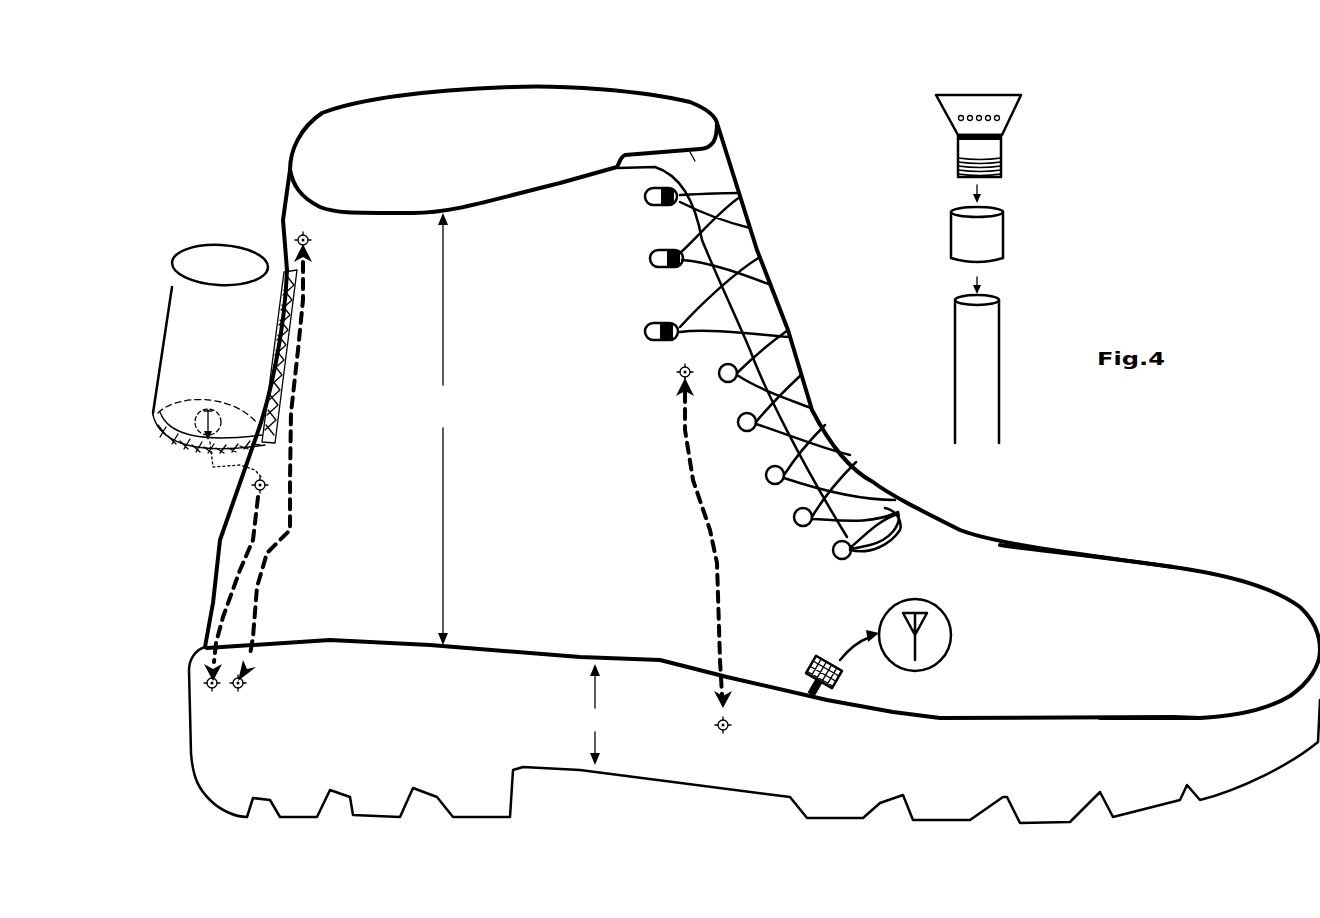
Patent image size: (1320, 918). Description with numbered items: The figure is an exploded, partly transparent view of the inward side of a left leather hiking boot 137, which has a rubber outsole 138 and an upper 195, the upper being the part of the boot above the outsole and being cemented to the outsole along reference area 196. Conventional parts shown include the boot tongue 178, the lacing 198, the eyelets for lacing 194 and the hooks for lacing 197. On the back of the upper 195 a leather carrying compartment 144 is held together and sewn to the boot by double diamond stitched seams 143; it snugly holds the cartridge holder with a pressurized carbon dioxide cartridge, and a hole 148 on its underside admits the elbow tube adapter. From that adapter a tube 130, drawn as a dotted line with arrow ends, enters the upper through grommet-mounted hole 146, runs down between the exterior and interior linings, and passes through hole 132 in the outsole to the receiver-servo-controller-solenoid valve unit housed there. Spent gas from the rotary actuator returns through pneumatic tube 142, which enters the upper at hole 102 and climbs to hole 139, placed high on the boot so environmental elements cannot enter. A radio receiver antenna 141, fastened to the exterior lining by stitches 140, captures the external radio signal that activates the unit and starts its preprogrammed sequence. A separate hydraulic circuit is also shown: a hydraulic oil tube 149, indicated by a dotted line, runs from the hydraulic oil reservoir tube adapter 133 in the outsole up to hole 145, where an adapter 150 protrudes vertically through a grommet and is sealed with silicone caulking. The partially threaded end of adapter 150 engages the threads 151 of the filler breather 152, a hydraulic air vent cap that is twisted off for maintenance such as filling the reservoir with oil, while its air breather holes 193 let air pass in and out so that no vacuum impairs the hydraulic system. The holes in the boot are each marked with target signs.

The hole 102 is at (730, 730).
The tube 130 is at (231, 589).
The hole 132 is at (218, 688).
The hydraulic oil reservoir tube adapter 133 is at (248, 678).
The leather hiking boot 137 is at (1073, 565).
The rubber outsole 138 is at (595, 714).
The hole 139 is at (680, 376).
The stitches 140 is at (803, 660).
The radio receiver antenna 141 is at (823, 653).
The pneumatic tube 142 is at (704, 543).
The stitches 143 is at (178, 454).
The leather carrying compartment 144 is at (172, 290).
The hole 145 is at (313, 243).
The hole 146 is at (263, 492).
The hole 148 is at (228, 418).
The hydraulic oil tube 149 is at (962, 318).
The adapter 150 is at (962, 231).
The threads 151 is at (944, 166).
The filler breather 152 is at (957, 94).
The boot tongue 178 is at (697, 150).
The air breather holes 193 is at (1000, 113).
The eyelets for lacing 194 is at (856, 553).
The upper 195 is at (445, 429).
The reference area 196 is at (1175, 710).
The hooks for lacing 197 is at (644, 260).
The lacing 198 is at (700, 305).